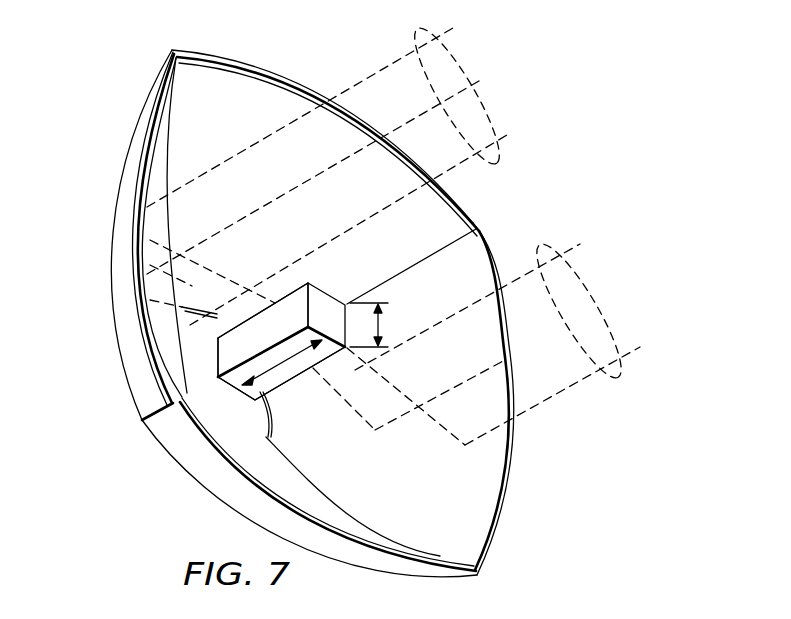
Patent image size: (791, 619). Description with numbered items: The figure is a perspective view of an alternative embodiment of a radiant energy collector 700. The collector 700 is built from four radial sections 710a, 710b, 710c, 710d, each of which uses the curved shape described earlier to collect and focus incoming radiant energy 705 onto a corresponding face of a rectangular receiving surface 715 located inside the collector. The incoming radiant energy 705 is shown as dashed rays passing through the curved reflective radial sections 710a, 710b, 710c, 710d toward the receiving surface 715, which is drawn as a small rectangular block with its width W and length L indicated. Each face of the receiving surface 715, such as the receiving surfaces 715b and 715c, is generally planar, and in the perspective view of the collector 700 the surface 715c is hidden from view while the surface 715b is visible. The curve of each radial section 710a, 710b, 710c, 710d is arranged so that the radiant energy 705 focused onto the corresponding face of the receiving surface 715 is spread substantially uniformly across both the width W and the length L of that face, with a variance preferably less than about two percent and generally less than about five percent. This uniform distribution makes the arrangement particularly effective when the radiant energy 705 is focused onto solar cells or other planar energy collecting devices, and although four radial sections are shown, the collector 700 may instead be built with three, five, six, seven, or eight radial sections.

The radiant energy collector 700 is at (590, 186).
The incoming radiant energy 705 is at (415, 37).
The radial section 710a is at (508, 497).
The radial section 710b is at (195, 475).
The radial section 710c is at (123, 141).
The radial section 710d is at (243, 64).
The rectangular receiving surface 715 is at (335, 294).
The receiving surface 715b is at (298, 366).
The receiving surface 715c is at (297, 302).